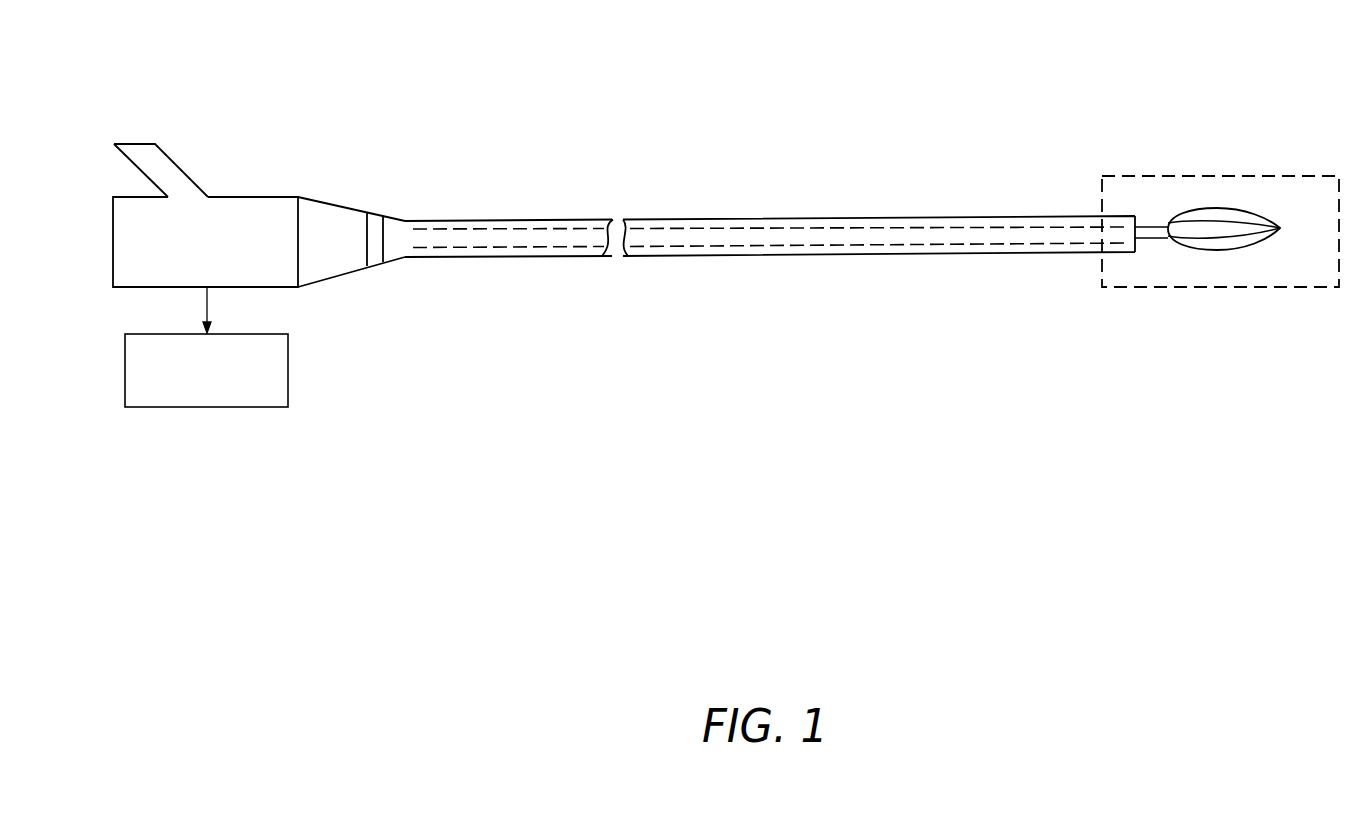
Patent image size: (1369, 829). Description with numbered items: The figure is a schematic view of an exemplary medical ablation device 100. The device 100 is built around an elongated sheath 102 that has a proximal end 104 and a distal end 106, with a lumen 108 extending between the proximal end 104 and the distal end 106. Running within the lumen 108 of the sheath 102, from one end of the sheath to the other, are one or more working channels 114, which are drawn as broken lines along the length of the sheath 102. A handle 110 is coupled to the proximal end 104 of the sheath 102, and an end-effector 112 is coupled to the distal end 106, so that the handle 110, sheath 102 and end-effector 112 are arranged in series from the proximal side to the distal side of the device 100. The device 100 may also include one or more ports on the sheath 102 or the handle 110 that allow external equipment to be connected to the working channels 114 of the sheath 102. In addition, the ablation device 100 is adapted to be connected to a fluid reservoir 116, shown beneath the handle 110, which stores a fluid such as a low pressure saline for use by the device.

The medical ablation device 100 is at (230, 126).
The sheath 102 is at (735, 218).
The proximal end 104 is at (407, 220).
The distal end 106 is at (1135, 217).
The lumen 108 is at (865, 223).
The handle 110 is at (278, 195).
The end-effector 112 is at (1217, 282).
The working channels 114 is at (870, 238).
The fluid reservoir 116 is at (265, 407).